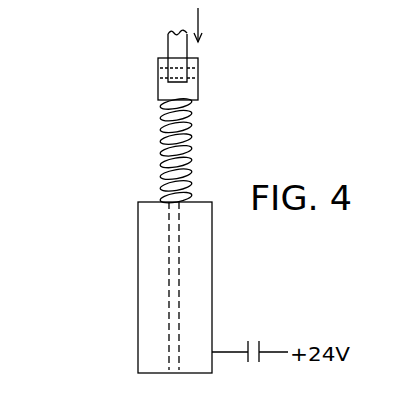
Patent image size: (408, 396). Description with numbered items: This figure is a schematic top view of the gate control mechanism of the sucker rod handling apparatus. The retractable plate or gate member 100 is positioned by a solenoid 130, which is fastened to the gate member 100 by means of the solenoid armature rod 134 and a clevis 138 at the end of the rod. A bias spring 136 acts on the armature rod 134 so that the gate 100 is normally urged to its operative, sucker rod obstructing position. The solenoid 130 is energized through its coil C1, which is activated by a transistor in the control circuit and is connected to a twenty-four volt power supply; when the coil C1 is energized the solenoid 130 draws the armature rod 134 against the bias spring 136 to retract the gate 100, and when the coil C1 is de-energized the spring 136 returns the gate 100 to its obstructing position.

The plate or gate member 100 is at (172, 43).
The clevis 138 is at (198, 88).
The solenoid armature rod 134 is at (192, 118).
The bias spring 136 is at (192, 152).
The solenoid 130 is at (143, 263).
The coil C1 is at (250, 336).